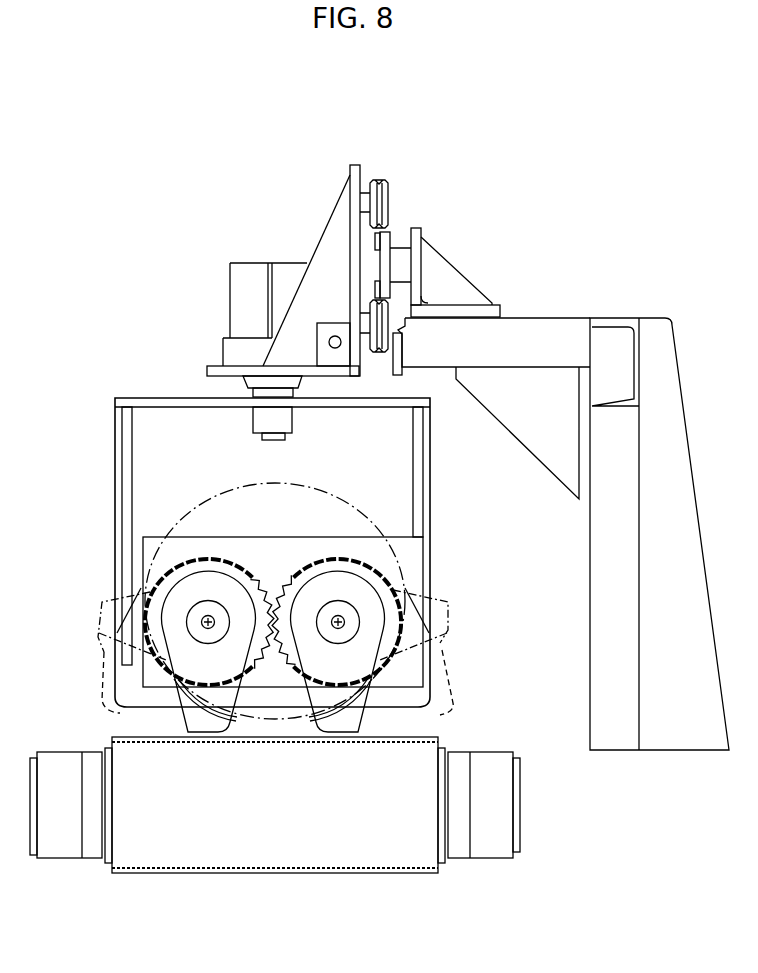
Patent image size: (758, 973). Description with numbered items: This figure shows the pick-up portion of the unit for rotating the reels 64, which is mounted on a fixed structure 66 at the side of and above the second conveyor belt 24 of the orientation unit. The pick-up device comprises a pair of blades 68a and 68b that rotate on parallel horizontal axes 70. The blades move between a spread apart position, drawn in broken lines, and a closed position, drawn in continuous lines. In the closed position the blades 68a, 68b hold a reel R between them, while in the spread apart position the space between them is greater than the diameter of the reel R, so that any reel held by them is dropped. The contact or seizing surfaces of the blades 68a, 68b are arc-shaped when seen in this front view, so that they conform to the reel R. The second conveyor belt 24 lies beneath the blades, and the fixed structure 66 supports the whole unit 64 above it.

The second conveyor belt 24 is at (262, 740).
The unit for rotating the reels 64 is at (177, 513).
The fixed structure 66 is at (623, 508).
The blade 68a is at (197, 720).
The blade 68b is at (347, 717).
The parallel horizontal axes 70 is at (338, 622).
The reel R is at (228, 497).